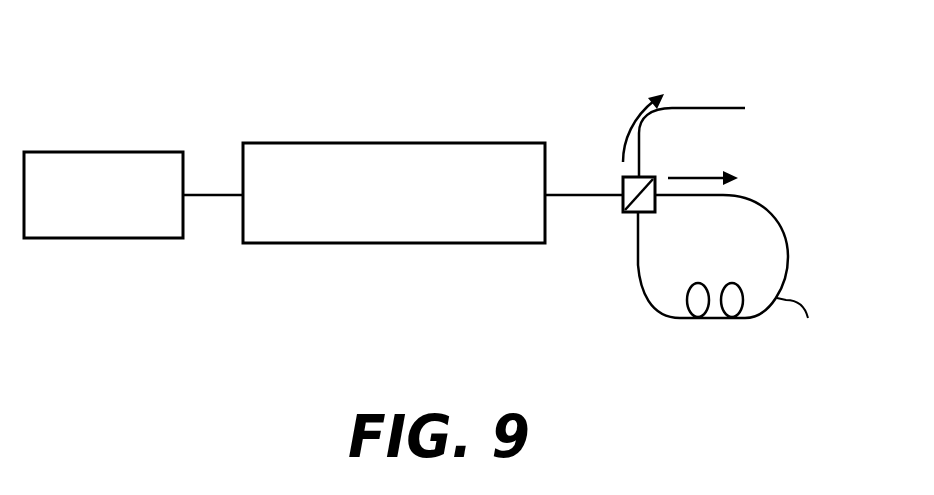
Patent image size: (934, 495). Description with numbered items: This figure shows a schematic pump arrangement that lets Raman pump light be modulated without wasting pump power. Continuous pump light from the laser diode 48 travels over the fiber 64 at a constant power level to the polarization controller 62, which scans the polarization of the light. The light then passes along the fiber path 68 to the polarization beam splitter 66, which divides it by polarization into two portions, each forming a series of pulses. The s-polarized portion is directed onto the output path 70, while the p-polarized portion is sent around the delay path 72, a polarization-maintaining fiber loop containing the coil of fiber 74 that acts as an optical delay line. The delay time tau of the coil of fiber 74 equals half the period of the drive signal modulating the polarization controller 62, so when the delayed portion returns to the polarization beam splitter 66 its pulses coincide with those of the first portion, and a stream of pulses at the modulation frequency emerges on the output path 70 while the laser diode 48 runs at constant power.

The laser diode 48 is at (118, 152).
The polarization controller 62 is at (475, 143).
The fiber 64 is at (218, 194).
The polarization beam splitter 66 is at (630, 214).
The fiber path 68 is at (582, 195).
The output path 70 is at (700, 108).
The delay path 72 is at (790, 258).
The coil of fiber 74 is at (717, 272).